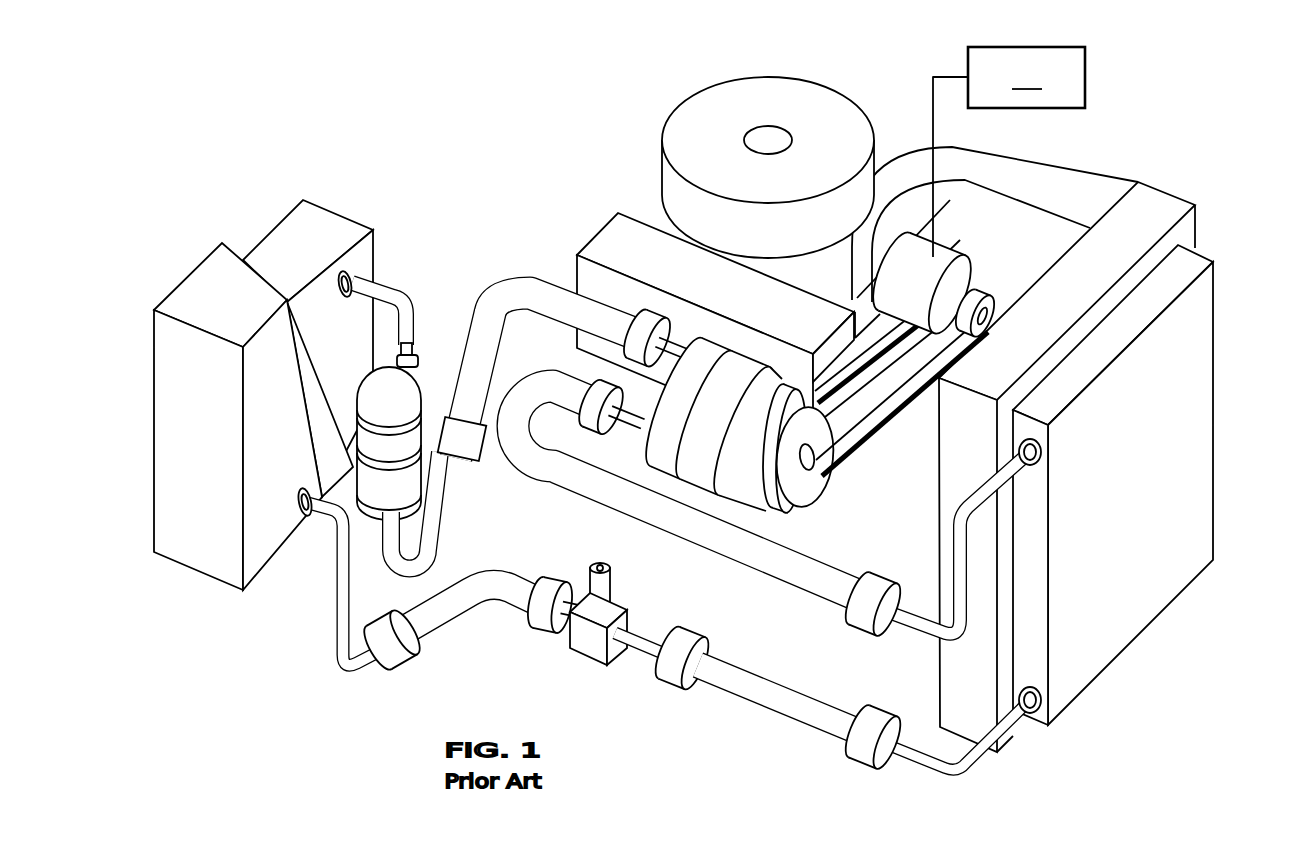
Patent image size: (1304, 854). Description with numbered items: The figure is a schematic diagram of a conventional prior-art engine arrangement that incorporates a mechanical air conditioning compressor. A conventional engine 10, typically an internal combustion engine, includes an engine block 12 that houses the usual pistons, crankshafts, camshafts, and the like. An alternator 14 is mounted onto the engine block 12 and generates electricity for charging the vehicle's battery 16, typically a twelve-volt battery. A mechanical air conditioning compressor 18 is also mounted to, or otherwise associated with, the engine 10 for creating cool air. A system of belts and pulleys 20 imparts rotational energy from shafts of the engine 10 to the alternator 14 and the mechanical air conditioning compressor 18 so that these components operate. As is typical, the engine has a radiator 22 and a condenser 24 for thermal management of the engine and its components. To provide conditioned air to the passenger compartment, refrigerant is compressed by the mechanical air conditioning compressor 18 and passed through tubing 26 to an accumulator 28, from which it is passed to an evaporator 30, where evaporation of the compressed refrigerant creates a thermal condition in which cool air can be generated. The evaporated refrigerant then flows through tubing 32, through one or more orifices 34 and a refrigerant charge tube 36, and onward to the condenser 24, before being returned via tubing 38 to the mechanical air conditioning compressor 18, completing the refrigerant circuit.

The engine 10 is at (555, 145).
The engine block 12 is at (597, 235).
The alternator 14 is at (965, 257).
The battery 16 is at (1026, 77).
The mechanical air conditioning compressor 18 is at (697, 478).
The system of belts and pulleys 20 is at (873, 414).
The radiator 22 is at (1160, 205).
The condenser 24 is at (1206, 303).
The tubing 26 is at (508, 291).
The accumulator 28 is at (367, 398).
The evaporator 30 is at (194, 290).
The tubing 32 is at (337, 623).
The orifices 34 is at (402, 652).
The refrigerant charge tube 36 is at (590, 648).
The tubing 38 is at (575, 482).